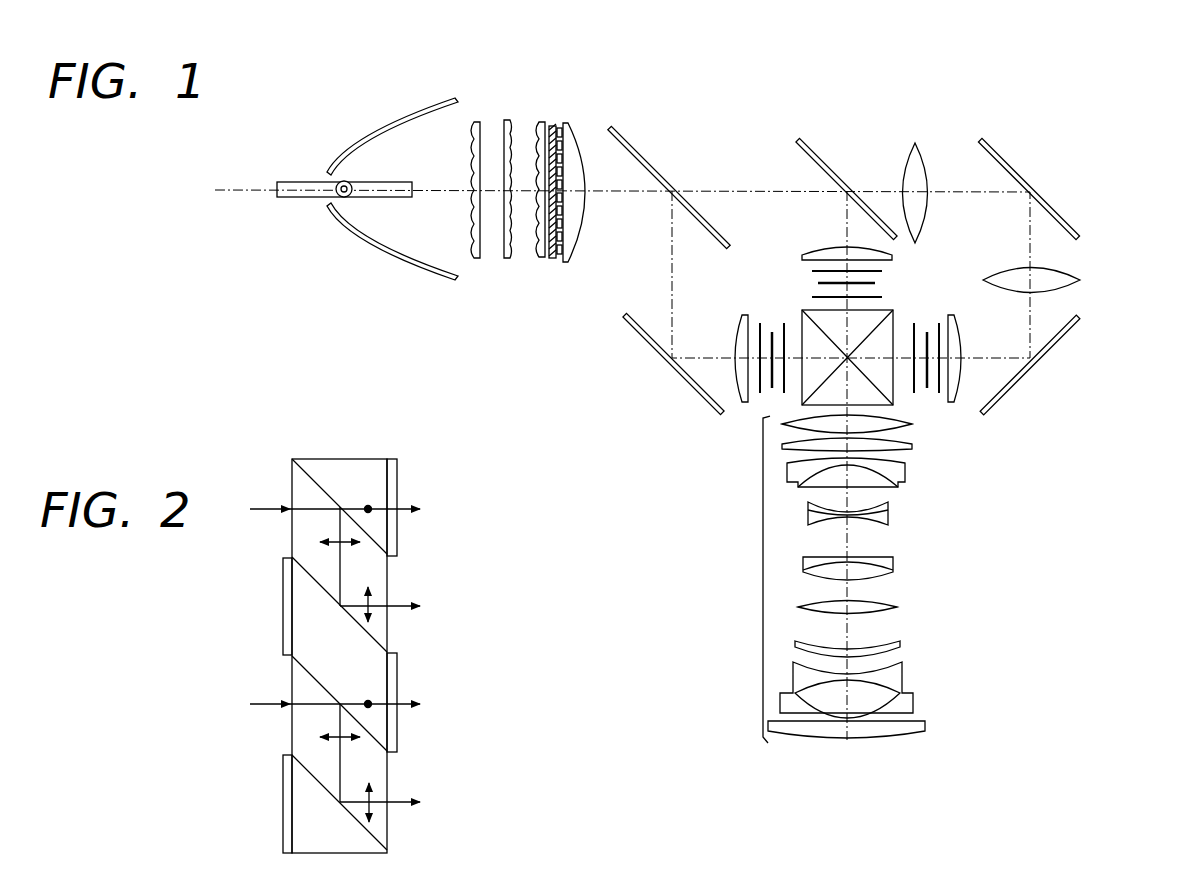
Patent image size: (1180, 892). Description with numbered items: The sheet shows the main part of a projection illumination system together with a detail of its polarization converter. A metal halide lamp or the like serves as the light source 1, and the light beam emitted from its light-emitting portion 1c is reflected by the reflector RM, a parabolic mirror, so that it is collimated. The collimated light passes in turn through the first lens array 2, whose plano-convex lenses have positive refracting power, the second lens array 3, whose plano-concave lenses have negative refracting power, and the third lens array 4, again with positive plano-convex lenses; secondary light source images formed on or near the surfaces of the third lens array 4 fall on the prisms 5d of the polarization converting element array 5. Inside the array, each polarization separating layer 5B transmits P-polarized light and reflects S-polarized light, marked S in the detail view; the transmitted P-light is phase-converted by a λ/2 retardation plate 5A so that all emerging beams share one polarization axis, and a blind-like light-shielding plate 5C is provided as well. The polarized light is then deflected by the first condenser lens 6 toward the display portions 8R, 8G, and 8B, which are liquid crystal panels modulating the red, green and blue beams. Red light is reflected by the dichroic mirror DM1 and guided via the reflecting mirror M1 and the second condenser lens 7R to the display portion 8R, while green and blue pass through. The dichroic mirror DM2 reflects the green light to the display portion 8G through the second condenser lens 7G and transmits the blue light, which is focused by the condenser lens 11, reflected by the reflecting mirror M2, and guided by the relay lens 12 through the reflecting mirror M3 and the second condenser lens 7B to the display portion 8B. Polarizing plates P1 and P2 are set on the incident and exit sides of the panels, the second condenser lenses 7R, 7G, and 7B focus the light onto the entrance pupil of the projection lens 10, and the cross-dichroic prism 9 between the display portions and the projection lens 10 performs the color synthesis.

In FIG. 1, the reflector RM is at (339, 168).
In FIG. 1, the light source 1 is at (350, 183).
In FIG. 1, the light-emitting portion 1c is at (350, 196).
In FIG. 1, the first lens array 2 is at (474, 122).
In FIG. 1, the second lens array 3 is at (506, 120).
In FIG. 1, the third lens array 4 is at (540, 122).
In FIG. 1, the polarization converting element array 5 is at (558, 125).
In FIG. 2, the polarization converting element array 5 is at (391, 430).
In FIG. 1, the λ/2 retardation plate 5A is at (563, 126).
In FIG. 2, the λ/2 retardation plate 5A is at (397, 483).
In FIG. 1, the polarization separating layer 5B is at (552, 126).
In FIG. 2, the polarization separating layer 5B is at (333, 497).
In FIG. 1, the light-shielding plate 5C is at (546, 248).
In FIG. 2, the light-shielding plate 5C is at (283, 606).
In FIG. 2, the prism 5d is at (300, 493).
In FIG. 1, the first condenser lens 6 is at (580, 140).
In FIG. 1, the dichroic mirror DM1 is at (650, 158).
In FIG. 1, the dichroic mirror DM2 is at (833, 165).
In FIG. 1, the reflecting mirror M1 is at (632, 335).
In FIG. 1, the reflecting mirror M2 is at (1012, 168).
In FIG. 1, the reflecting mirror M3 is at (1050, 345).
In FIG. 1, the condenser lens 11 is at (919, 158).
In FIG. 1, the relay lens 12 is at (1068, 277).
In FIG. 1, the second condenser lens 7R is at (737, 330).
In FIG. 1, the second condenser lens 7G is at (816, 248).
In FIG. 1, the second condenser lens 7B is at (962, 345).
In FIG. 1, the display portion 8R is at (768, 330).
In FIG. 1, the display portion 8G is at (876, 283).
In FIG. 1, the display portion 8B is at (929, 392).
In FIG. 1, the polarizing plate P1 is at (882, 270).
In FIG. 1, the polarizing plate P2 is at (882, 297).
In FIG. 1, the cross-dichroic prism 9 is at (893, 312).
In FIG. 1, the projection lens 10 is at (762, 565).
In FIG. 2, the S-polarized light S is at (343, 543).